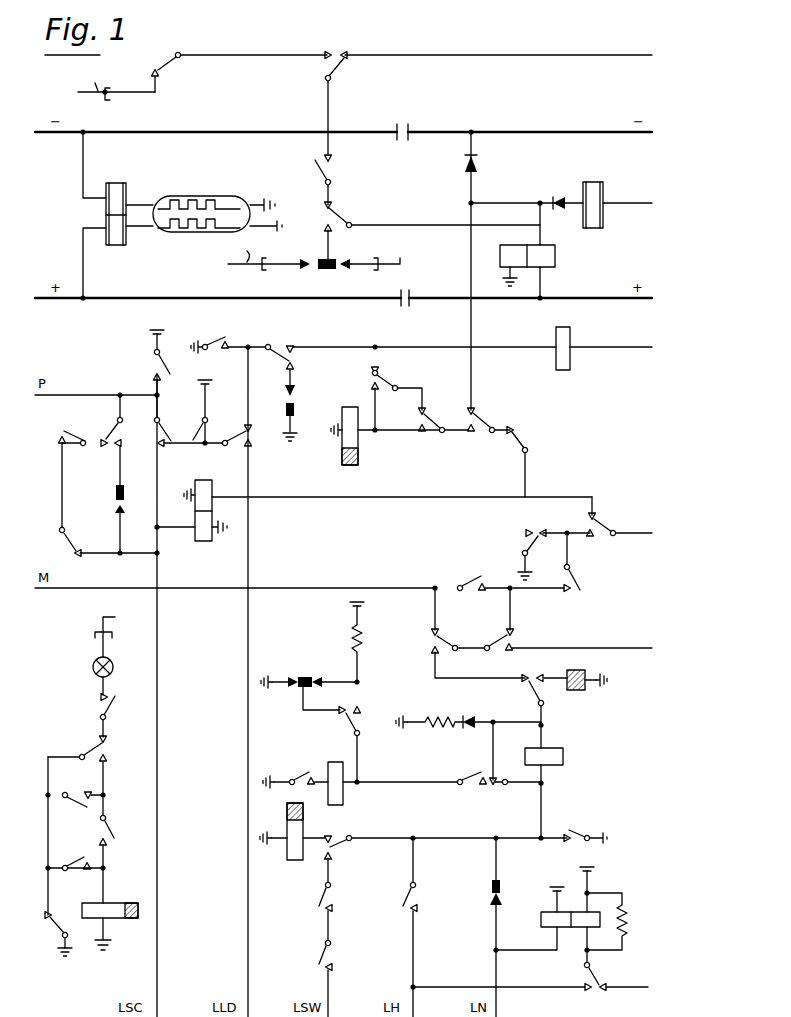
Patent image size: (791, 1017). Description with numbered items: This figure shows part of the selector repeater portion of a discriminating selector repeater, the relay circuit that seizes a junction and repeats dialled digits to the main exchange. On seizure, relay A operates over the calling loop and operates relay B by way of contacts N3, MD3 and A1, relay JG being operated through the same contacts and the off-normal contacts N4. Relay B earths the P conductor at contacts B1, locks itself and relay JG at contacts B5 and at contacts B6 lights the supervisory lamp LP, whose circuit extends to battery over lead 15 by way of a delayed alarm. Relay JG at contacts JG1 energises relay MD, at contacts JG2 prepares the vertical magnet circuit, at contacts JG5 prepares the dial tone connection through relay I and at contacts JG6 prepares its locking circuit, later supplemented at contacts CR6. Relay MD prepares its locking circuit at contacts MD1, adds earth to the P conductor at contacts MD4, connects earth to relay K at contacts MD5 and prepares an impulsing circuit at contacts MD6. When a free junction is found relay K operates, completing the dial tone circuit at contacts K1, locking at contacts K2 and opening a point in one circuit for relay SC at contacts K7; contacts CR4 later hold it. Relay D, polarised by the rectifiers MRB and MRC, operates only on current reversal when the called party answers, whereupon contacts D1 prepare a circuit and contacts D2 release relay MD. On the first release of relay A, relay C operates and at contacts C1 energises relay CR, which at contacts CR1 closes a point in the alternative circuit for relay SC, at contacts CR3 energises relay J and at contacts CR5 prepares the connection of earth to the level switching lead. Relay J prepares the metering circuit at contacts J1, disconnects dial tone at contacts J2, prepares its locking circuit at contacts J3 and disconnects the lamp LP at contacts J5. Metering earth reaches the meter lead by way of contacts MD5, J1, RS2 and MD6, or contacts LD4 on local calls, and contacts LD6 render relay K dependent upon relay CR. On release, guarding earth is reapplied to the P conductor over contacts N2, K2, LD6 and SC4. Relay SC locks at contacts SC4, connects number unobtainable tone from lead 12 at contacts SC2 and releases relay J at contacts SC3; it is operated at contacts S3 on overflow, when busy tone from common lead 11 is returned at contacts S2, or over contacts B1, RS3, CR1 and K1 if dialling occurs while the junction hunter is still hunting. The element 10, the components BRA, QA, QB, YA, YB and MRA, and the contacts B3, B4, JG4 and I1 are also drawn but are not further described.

The line terminal 10 is at (116, 84).
The common lead 11 is at (269, 256).
The lead 12 is at (390, 255).
The lead 15 is at (115, 634).
The contacts J2 is at (159, 65).
The contacts JG5 is at (332, 94).
The bridge rectifier BRA is at (204, 205).
The contacts S2 is at (348, 258).
The capacitor QB is at (401, 123).
The capacitor QA is at (404, 308).
The contacts K1 is at (336, 180).
The contacts SC2 is at (433, 215).
The rectifier MRB is at (487, 180).
The rectifier MRC is at (527, 194).
The contacts B1 is at (149, 364).
The contacts SC4 is at (189, 431).
The contacts RS3 is at (107, 438).
The contacts CR1 is at (72, 469).
The contacts S3 is at (107, 520).
The contacts K7 is at (100, 541).
The contacts MD4 is at (217, 411).
The contacts CR4 is at (229, 336).
The contacts K2 is at (400, 348).
The off-normal contacts N2 is at (278, 405).
The contacts LD6 is at (250, 438).
The contacts J3 is at (399, 400).
The contacts CR3 is at (413, 432).
The contact B3 is at (489, 430).
The contacts SC3 is at (531, 462).
The contacts D1 is at (596, 517).
The contacts MD5 is at (512, 555).
The contacts J1 is at (549, 572).
The contacts LD4 is at (472, 592).
The contacts MD6 is at (463, 633).
The contacts RS2 is at (568, 619).
The contacts JG2 is at (544, 703).
The resistor YB is at (347, 643).
The off-normal contacts N3 is at (309, 685).
The contacts MD3 is at (342, 746).
The resistor YA is at (429, 714).
The rectifier MRA is at (499, 711).
The contacts A1 is at (442, 763).
The contact B4 is at (295, 771).
The contacts C1 is at (446, 839).
The contacts CR5 is at (341, 901).
The contact JG4 is at (339, 978).
The contacts JG6 is at (424, 927).
The off-normal contacts N4 is at (485, 927).
The contacts B5 is at (585, 827).
The contacts CR6 is at (530, 984).
The supervisory lamp LP is at (112, 676).
The contacts B6 is at (95, 716).
The contacts J5 is at (86, 765).
The contact I1 is at (75, 836).
The contacts MD1 is at (121, 834).
The contacts JG1 is at (75, 873).
The contacts D2 is at (54, 934).